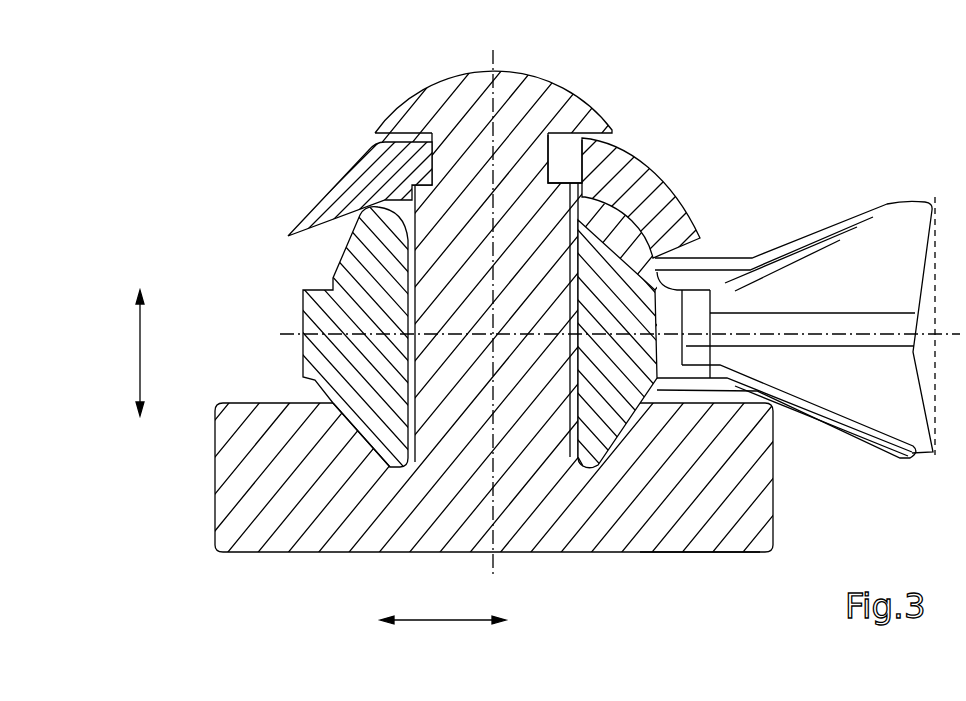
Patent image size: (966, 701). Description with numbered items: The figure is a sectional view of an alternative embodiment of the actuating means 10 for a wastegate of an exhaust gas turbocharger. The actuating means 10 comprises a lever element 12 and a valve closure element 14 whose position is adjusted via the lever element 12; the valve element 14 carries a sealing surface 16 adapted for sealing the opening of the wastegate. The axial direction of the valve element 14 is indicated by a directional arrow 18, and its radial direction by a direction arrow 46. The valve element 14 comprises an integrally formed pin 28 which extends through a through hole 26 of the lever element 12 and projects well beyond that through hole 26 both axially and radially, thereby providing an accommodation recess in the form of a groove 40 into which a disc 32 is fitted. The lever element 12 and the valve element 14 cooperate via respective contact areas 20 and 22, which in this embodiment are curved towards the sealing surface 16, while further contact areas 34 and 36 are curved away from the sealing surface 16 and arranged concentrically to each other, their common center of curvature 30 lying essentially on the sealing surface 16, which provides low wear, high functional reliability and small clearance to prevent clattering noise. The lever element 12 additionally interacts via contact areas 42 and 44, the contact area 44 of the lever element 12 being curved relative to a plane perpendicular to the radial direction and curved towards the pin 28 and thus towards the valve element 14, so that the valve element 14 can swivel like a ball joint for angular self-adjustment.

The actuating means 10 is at (803, 631).
The lever element 12 is at (903, 243).
The valve closure element 14 is at (642, 537).
The sealing surface 16 is at (697, 552).
The directional arrow 18 is at (140, 347).
The contact area 20 is at (334, 504).
The contact area 22 is at (358, 440).
The through hole 26 is at (548, 250).
The pin 28 is at (448, 103).
The center of curvature 30 is at (490, 557).
The disc 32 is at (373, 162).
The contact area 34 is at (407, 350).
The contact area 36 is at (333, 278).
The groove 40 is at (557, 175).
The contact area 42 is at (563, 350).
The contact area 44 is at (575, 318).
The direction arrow 46 is at (463, 622).